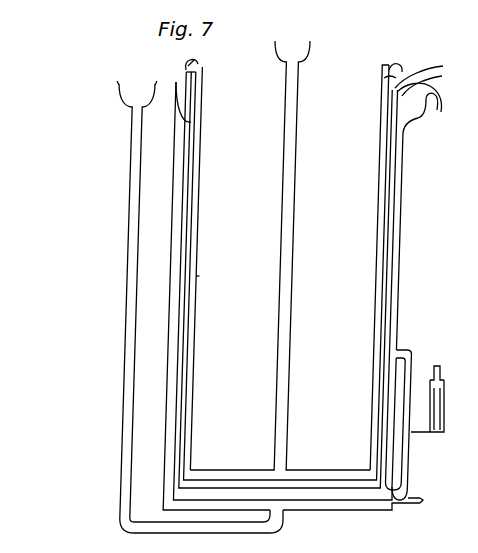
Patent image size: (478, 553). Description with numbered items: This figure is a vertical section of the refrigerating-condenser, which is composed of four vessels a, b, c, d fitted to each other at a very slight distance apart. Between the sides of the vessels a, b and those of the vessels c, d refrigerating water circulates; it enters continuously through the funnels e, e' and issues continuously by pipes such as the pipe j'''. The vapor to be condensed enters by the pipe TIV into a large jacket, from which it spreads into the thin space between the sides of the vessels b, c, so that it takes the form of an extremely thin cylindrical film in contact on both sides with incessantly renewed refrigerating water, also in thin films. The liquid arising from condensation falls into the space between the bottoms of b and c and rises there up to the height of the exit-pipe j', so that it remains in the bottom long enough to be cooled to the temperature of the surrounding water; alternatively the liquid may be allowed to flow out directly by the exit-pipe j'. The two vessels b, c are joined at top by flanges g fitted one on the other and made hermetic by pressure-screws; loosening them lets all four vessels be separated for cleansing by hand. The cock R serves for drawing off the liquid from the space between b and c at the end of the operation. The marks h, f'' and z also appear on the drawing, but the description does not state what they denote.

The funnel e is at (200, 307).
The funnel e' is at (280, 255).
The vessel a is at (291, 291).
The vessel b is at (334, 295).
The vessel c is at (285, 275).
The vessel d is at (279, 276).
The flange g is at (186, 184).
The stopper h is at (296, 82).
The stopper hook f'' is at (189, 58).
The partition z is at (197, 279).
The vapor inlet pipe TIV is at (427, 80).
The water exit pipe j''' is at (422, 109).
The exit-pipe j' is at (430, 393).
The cock R is at (421, 502).